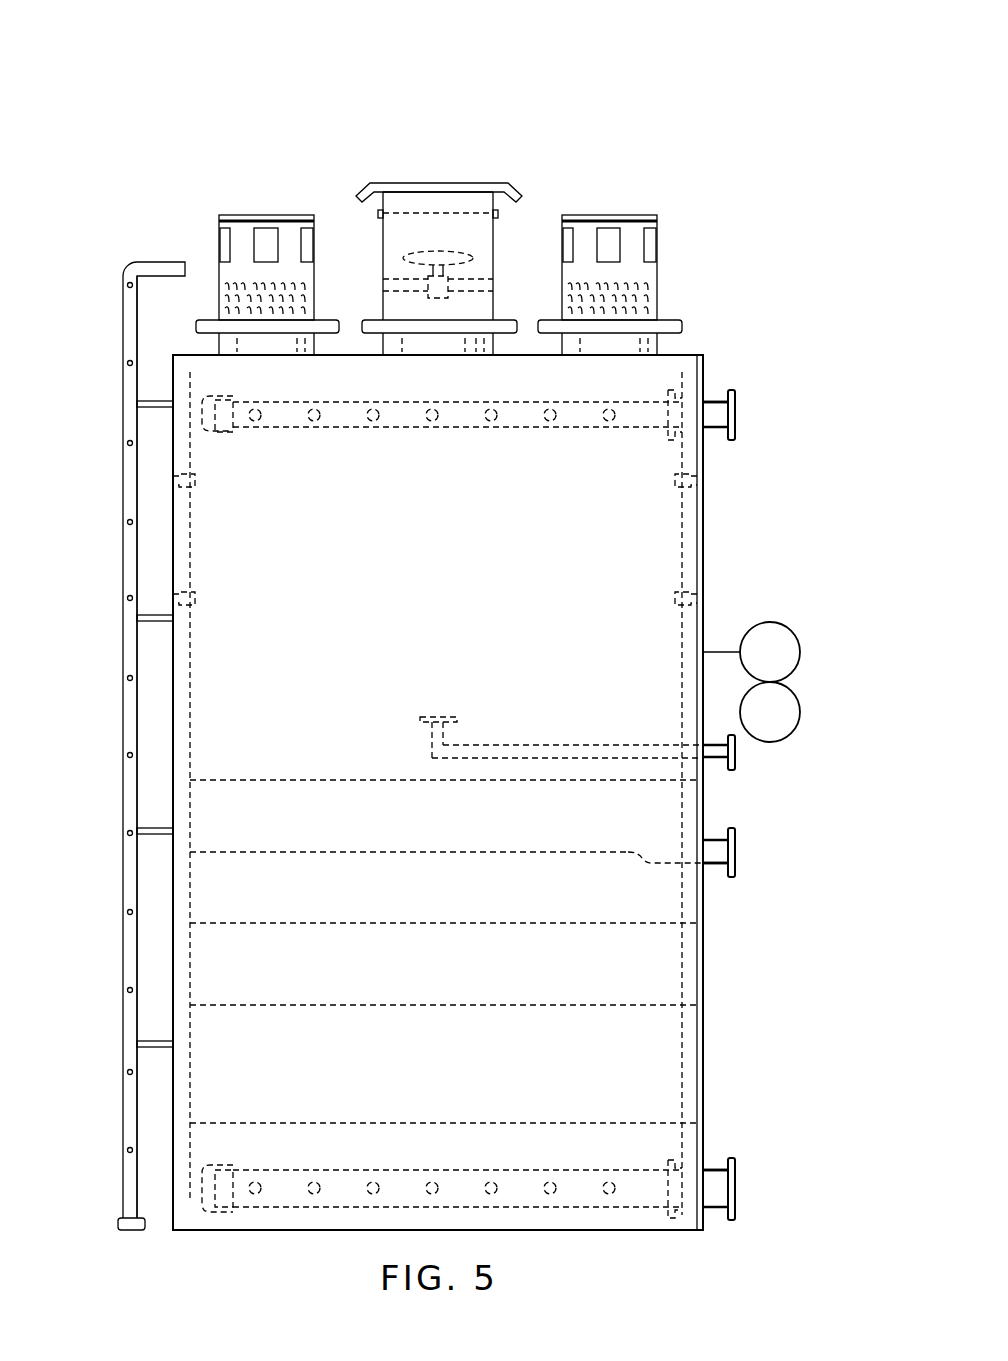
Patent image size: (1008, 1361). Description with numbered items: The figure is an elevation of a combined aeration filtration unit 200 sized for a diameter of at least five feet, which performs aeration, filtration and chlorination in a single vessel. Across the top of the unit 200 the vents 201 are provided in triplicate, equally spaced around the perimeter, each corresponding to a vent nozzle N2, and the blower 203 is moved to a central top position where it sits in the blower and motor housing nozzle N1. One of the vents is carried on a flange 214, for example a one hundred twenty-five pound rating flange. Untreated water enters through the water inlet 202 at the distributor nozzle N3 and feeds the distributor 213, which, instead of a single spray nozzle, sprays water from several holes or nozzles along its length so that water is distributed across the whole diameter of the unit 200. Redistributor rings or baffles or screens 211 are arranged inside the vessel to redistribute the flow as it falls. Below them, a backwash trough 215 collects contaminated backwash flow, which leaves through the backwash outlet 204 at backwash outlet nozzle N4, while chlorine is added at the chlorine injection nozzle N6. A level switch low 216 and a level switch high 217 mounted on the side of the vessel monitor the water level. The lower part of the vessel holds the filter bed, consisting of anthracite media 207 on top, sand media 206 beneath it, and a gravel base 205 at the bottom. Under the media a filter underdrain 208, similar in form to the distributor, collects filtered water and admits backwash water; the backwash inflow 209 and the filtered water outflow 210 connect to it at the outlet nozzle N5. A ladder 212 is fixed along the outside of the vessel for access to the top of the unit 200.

The combined aeration filtration unit 200 is at (342, 90).
The vent 201 is at (642, 200).
The water inlet 202 is at (737, 412).
The blower 203 is at (468, 172).
The backwash outlet 204 is at (737, 843).
The gravel base 205 is at (695, 1148).
The sand media 206 is at (700, 1063).
The anthracite media 207 is at (700, 963).
The filter underdrain 208 is at (302, 1210).
The backwash inflow 209 is at (718, 1210).
The filtered water outflow 210 is at (737, 1190).
The redistributor rings or baffles or screens 211 is at (200, 480).
The ladder 212 is at (122, 650).
The distributor 213 is at (399, 432).
The flange 214 is at (685, 327).
The backwash trough 215 is at (695, 818).
The level switch low 216 is at (802, 652).
The level switch high 217 is at (802, 712).
The blower and motor housing N1 is at (428, 170).
The vent N2 is at (258, 195).
The distributor N3 is at (752, 432).
The backwash outlet N4 is at (752, 870).
The outlet N5 is at (750, 1166).
The chlorine injection N6 is at (752, 760).